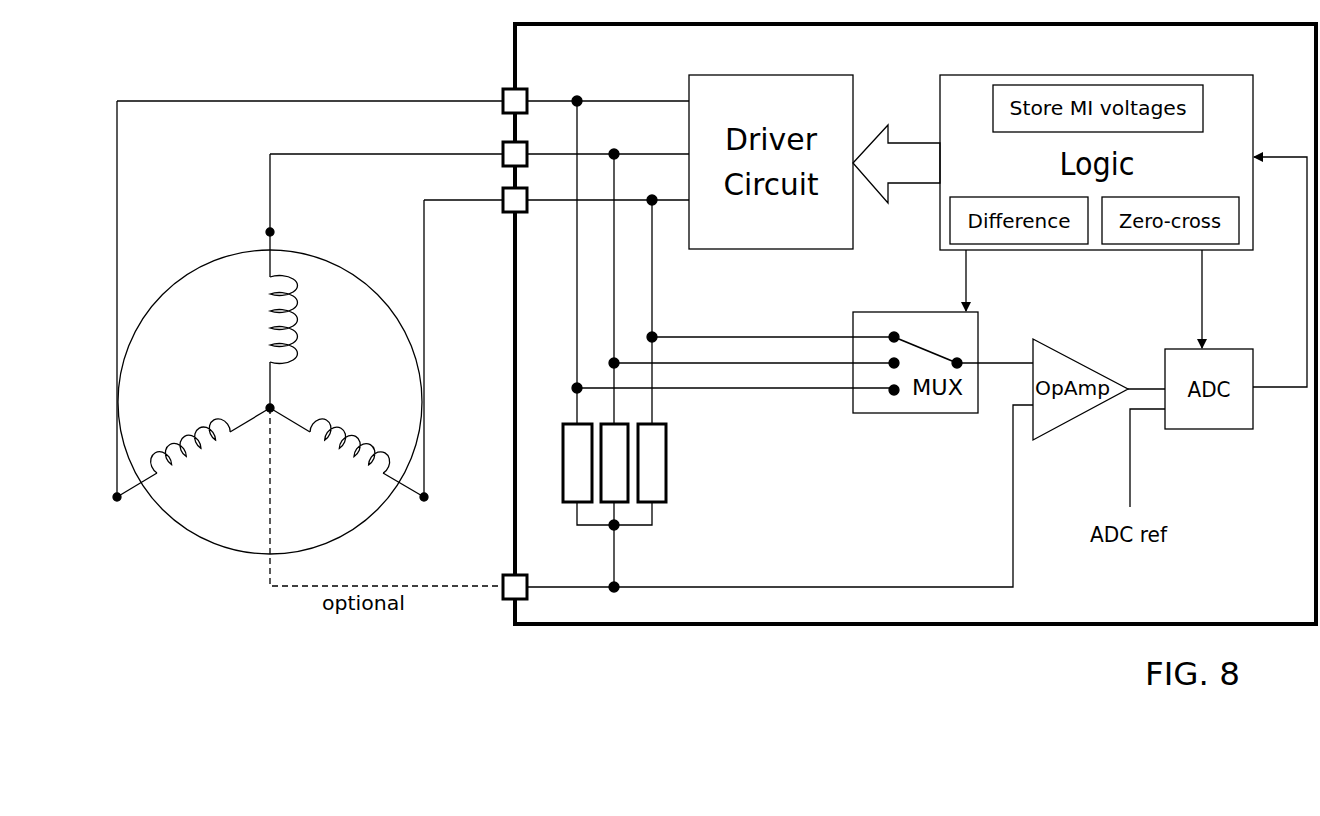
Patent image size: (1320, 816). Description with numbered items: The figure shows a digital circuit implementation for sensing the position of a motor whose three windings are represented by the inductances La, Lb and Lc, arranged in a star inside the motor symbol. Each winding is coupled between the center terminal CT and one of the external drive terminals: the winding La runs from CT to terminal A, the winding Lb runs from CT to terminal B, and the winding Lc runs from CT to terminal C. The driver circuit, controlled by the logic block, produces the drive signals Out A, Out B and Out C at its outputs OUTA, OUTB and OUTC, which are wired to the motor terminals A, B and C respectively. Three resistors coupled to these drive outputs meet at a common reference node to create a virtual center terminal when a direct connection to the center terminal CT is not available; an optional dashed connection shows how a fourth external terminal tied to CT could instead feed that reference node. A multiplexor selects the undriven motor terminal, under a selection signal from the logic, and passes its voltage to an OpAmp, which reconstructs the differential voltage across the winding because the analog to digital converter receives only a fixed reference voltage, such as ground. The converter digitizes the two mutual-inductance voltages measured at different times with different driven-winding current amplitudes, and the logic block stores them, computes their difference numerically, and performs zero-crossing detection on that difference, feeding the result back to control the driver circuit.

The Out C drive terminal signal OUTC is at (322, 285).
The Out A drive terminal signal OUTA is at (398, 178).
The Out B drive terminal signal OUTB is at (467, 335).
The external drive terminal A is at (280, 231).
The external drive terminal B is at (438, 487).
The external drive terminal C is at (100, 487).
The center terminal CT is at (252, 399).
The motor winding inductance La is at (294, 342).
The motor winding inductance Lb is at (347, 448).
The motor winding inductance Lc is at (193, 450).